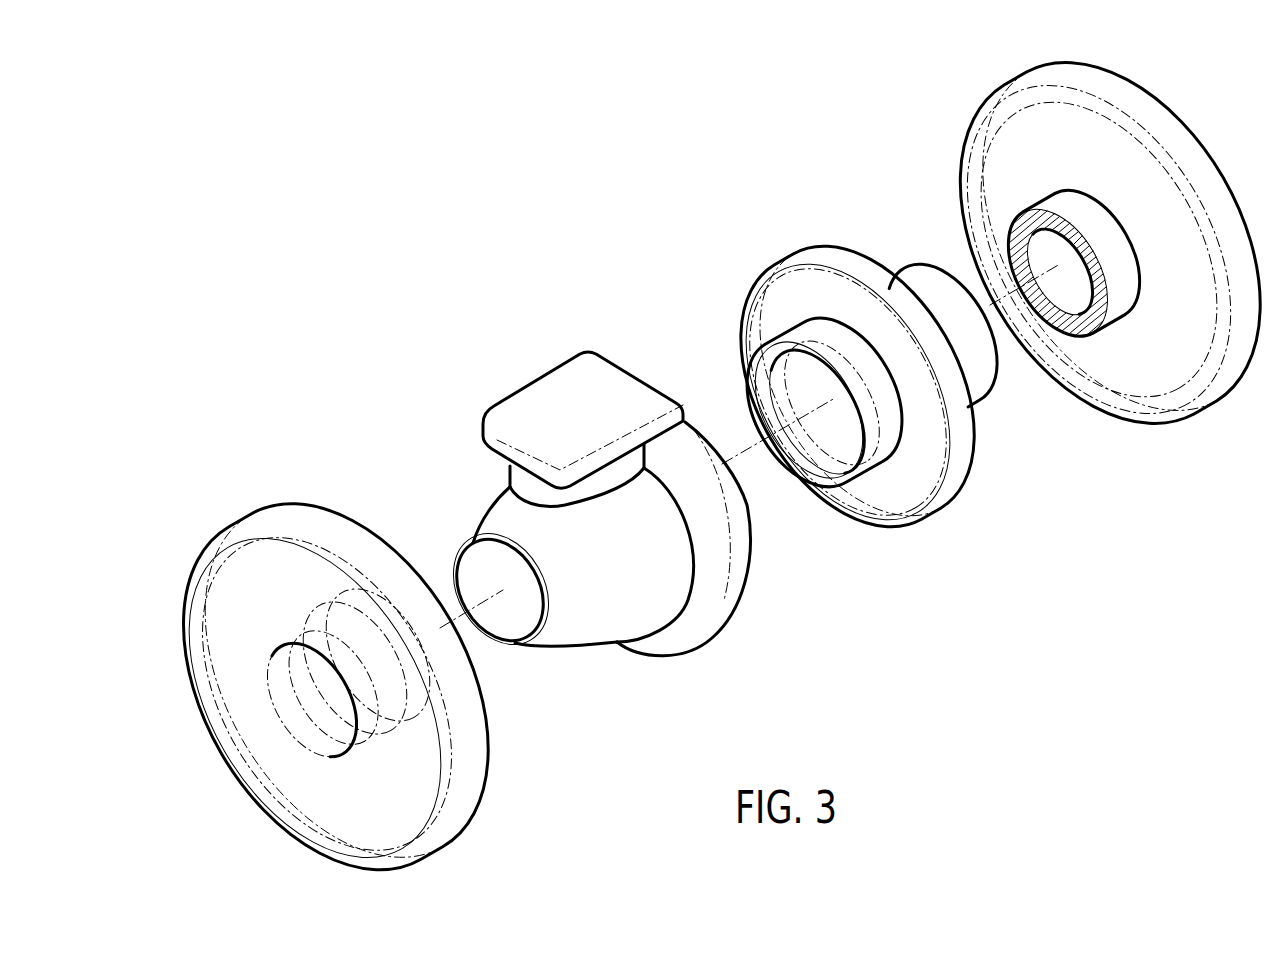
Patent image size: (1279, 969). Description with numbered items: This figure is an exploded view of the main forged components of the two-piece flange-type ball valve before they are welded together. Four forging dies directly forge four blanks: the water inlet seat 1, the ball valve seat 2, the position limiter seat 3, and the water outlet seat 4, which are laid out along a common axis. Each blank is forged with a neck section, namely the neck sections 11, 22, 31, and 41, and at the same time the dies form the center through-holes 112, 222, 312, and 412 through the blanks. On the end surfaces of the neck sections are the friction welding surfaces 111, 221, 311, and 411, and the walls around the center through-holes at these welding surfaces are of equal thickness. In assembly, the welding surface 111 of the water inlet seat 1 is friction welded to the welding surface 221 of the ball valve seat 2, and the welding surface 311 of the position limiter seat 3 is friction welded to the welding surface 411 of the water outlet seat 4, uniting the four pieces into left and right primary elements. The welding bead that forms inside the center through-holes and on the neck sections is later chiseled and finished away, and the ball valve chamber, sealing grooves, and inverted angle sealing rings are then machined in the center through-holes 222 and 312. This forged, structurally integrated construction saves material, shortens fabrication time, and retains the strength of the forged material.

The water inlet seat 1 is at (326, 674).
The neck section 11 is at (350, 608).
The friction welding surface 111 is at (405, 617).
The center through-hole 112 is at (290, 685).
The ball valve seat 2 is at (598, 537).
The neck section 22 is at (591, 622).
The friction welding surface 221 is at (515, 642).
The center through-hole 222 is at (490, 568).
The position limiter seat 3 is at (866, 382).
The neck section 31 is at (986, 377).
The friction welding surface 311 is at (990, 335).
The center through-hole 312 is at (802, 382).
The water outlet seat 4 is at (1072, 246).
The neck section 41 is at (1002, 226).
The friction welding surface 411 is at (1023, 225).
The center through-hole 412 is at (1047, 252).